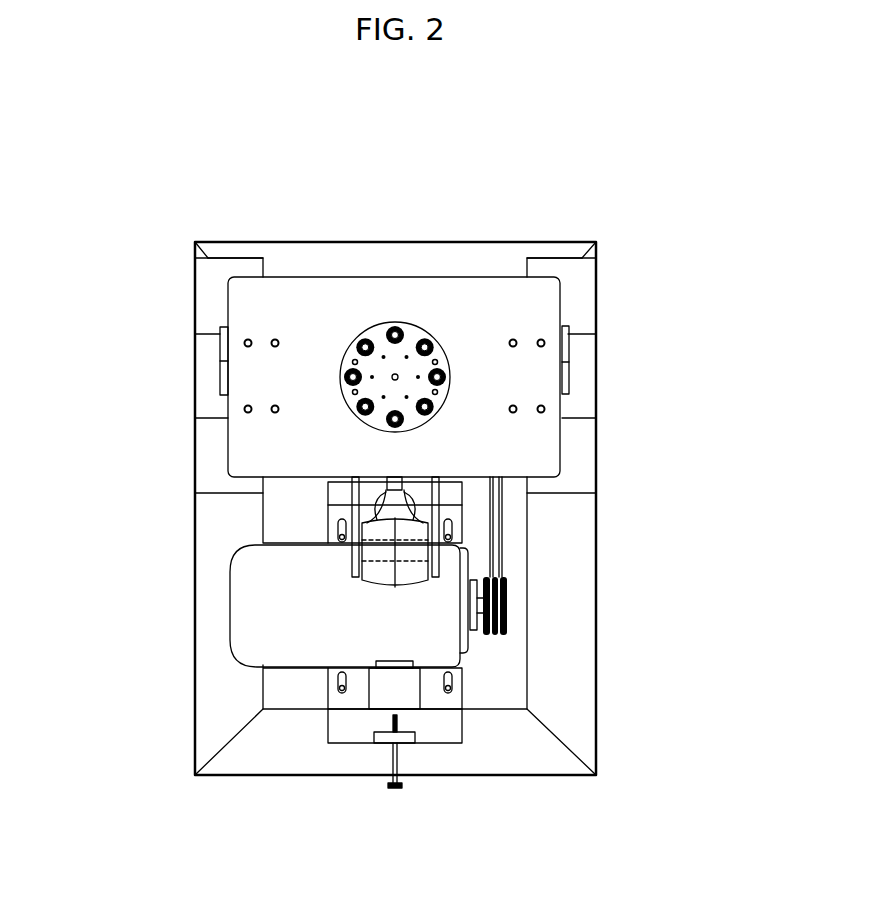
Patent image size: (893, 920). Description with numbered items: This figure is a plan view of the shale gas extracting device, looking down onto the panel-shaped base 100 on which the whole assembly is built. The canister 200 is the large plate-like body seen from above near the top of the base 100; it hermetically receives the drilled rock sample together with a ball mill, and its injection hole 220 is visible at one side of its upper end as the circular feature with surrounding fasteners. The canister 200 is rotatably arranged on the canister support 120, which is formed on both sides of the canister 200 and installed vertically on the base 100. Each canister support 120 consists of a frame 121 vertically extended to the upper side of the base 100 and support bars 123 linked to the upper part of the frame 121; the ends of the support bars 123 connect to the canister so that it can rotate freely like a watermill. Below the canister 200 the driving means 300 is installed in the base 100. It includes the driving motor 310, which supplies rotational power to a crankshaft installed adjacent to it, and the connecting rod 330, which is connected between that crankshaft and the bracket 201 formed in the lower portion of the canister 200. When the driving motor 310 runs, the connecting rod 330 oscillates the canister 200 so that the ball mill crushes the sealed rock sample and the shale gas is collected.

The base 100 is at (573, 610).
The canister support 120 is at (479, 326).
The frame 121 is at (576, 294).
The support bar 123 is at (569, 343).
The canister 200 is at (415, 322).
The bracket 201 is at (333, 488).
The injection hole 220 is at (393, 375).
The driving means 300 is at (276, 632).
The driving motor 310 is at (245, 630).
The connecting rod 330 is at (328, 531).